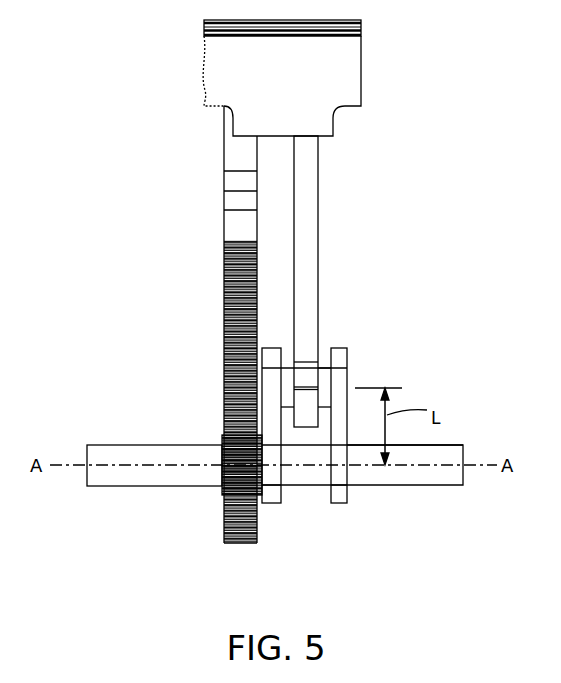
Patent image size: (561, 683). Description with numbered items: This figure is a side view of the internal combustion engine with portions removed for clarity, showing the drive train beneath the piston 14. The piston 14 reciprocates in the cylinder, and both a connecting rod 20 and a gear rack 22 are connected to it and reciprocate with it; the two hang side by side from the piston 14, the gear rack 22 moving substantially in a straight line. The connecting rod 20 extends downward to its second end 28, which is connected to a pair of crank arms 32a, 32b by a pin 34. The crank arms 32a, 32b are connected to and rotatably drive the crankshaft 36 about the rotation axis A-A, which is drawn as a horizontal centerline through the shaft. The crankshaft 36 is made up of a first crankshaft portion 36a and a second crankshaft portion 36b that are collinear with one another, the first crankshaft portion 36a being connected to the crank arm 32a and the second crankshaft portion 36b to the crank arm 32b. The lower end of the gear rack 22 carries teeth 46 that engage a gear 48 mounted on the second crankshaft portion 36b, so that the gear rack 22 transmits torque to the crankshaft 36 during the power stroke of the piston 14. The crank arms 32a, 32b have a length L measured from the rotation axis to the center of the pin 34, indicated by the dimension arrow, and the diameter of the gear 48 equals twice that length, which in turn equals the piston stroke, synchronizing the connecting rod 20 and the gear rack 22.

The piston 14 is at (345, 73).
The connecting rod 20 is at (310, 221).
The gear rack 22 is at (206, 324).
The second end 28 is at (303, 428).
The crank arm 32a is at (342, 493).
The crank arm 32b is at (272, 506).
The pin 34 is at (326, 378).
The crankshaft 36 is at (384, 474).
The first crankshaft portion 36a is at (443, 453).
The second crankshaft portion 36b is at (115, 453).
The teeth 46 is at (224, 315).
The gear 48 is at (223, 522).